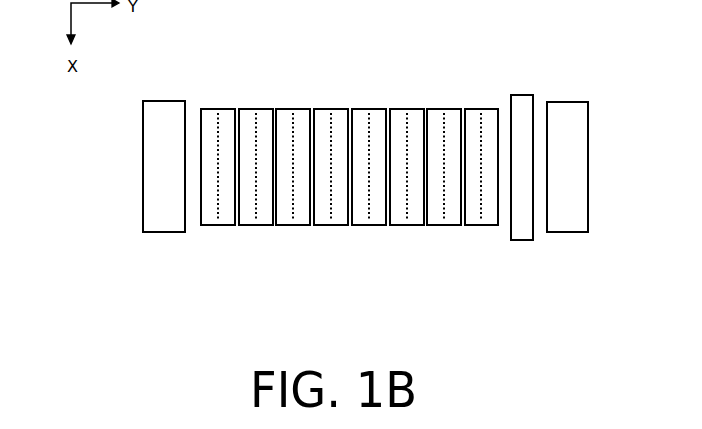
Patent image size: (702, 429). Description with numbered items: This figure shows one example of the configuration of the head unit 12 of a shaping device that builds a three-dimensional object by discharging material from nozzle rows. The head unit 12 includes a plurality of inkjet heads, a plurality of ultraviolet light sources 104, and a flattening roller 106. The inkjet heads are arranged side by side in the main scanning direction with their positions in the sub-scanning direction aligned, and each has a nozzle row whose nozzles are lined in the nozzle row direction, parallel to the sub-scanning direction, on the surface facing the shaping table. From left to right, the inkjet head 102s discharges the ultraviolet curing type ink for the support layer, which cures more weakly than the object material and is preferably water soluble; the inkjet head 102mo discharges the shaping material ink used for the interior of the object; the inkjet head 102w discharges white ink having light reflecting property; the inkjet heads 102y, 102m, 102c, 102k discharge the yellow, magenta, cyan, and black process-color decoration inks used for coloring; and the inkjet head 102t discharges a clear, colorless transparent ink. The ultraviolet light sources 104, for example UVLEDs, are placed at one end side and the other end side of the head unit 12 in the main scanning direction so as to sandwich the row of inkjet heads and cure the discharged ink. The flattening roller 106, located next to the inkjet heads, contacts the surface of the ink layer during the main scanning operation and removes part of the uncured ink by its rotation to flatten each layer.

The head unit 12 is at (598, 35).
The inkjet head 102s is at (207, 225).
The inkjet head 102mo is at (243, 225).
The inkjet head 102w is at (280, 225).
The inkjet head 102y is at (325, 225).
The inkjet head 102m is at (363, 225).
The inkjet head 102c is at (408, 225).
The inkjet head 102k is at (447, 225).
The inkjet head 102t is at (488, 225).
The ultraviolet light source 104 is at (147, 232).
The flattening roller 106 is at (523, 95).